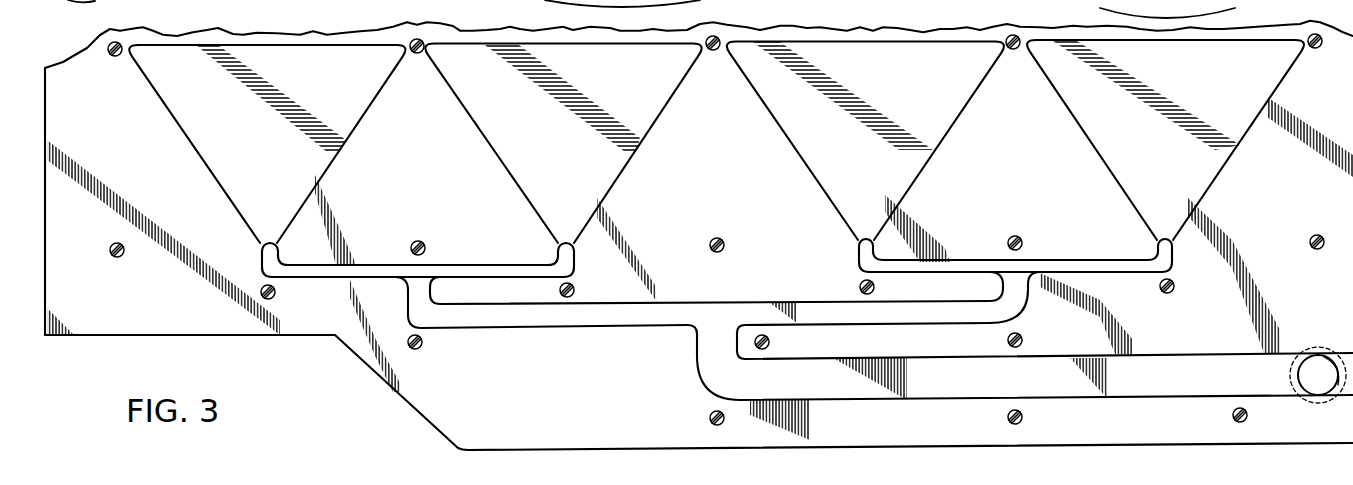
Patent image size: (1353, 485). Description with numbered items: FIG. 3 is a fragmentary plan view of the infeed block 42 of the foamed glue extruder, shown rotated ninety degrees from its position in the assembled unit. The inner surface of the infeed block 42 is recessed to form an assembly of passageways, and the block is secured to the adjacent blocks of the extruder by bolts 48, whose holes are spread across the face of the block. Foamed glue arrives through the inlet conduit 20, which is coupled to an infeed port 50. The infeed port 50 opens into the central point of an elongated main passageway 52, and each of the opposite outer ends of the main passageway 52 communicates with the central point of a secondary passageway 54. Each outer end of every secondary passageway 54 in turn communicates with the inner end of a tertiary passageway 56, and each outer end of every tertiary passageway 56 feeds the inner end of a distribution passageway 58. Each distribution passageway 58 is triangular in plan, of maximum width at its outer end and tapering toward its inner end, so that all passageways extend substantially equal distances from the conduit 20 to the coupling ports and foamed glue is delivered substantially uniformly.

The conduit 20 is at (1327, 402).
The infeed block 42 is at (452, 410).
The bolts 48 is at (110, 56).
The infeed port 50 is at (1325, 355).
The main passageway 52 is at (1160, 383).
The secondary passageway 54 is at (890, 313).
The tertiary passageway 56 is at (336, 273).
The distribution passageway 58 is at (513, 100).